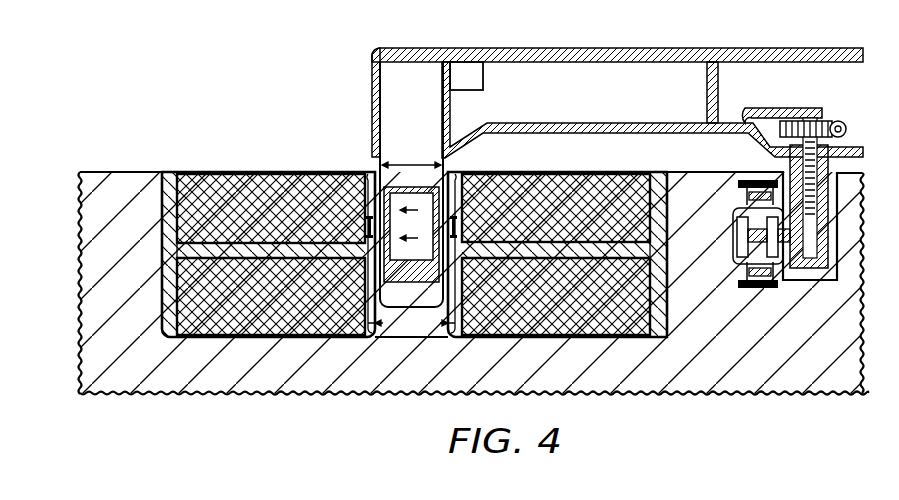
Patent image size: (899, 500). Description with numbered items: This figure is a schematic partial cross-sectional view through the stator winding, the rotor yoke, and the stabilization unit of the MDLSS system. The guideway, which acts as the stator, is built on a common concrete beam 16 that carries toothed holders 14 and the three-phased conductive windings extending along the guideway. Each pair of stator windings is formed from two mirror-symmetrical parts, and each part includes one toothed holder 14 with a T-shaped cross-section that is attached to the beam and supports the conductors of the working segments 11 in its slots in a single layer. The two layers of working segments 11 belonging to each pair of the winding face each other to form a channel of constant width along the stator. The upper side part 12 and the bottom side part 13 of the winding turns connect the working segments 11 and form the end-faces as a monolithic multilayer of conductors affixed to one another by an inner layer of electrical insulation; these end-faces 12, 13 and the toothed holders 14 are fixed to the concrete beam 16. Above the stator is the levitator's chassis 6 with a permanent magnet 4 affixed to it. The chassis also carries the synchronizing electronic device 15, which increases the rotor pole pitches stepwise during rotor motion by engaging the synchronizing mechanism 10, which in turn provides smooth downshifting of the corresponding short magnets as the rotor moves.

The permanent magnet 4 is at (740, 247).
The levitator's chassis 6 is at (772, 53).
The synchronizing mechanism 10 is at (568, 80).
The working segment 11 is at (367, 167).
The upper side part 12 is at (298, 183).
The bottom side part 13 is at (283, 317).
The toothed holder 14 is at (170, 174).
The synchronizing electronic device 15 is at (467, 74).
The concrete beam 16 is at (133, 187).